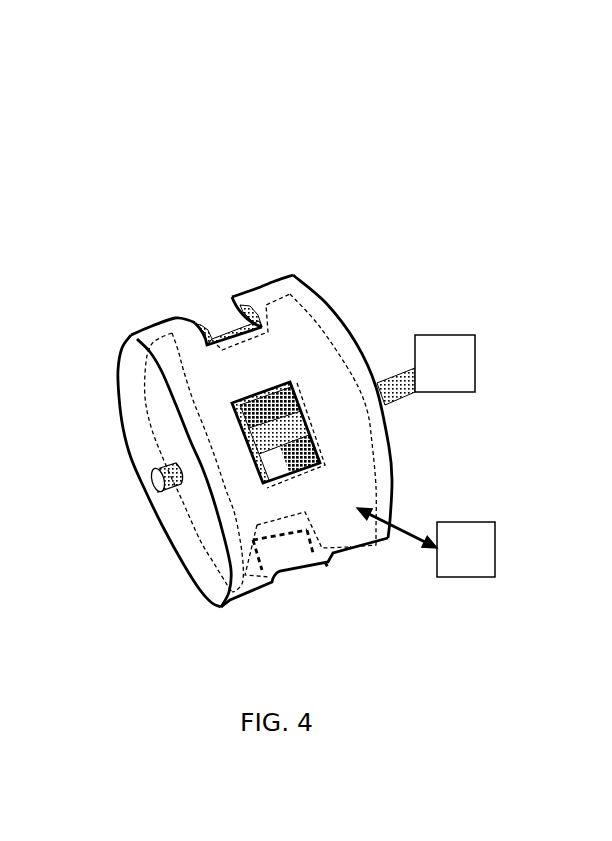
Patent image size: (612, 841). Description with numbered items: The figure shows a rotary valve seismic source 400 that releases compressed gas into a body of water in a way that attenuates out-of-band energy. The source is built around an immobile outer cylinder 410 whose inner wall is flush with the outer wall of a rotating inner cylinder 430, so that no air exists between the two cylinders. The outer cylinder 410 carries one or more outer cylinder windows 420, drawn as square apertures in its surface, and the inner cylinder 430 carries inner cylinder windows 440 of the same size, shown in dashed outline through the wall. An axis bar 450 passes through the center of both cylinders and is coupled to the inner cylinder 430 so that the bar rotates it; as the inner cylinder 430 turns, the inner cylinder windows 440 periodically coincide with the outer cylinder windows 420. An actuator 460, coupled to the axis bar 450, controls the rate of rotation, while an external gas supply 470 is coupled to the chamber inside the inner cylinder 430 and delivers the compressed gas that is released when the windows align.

The rotary valve seismic source 400 is at (270, 45).
The outer cylinder 410 is at (153, 326).
The outer cylinder windows 420 is at (232, 299).
The inner cylinder 430 is at (174, 332).
The inner cylinder windows 440 is at (233, 350).
The axis bar 450 is at (152, 470).
The actuator 460 is at (453, 335).
The external gas supply 470 is at (475, 522).